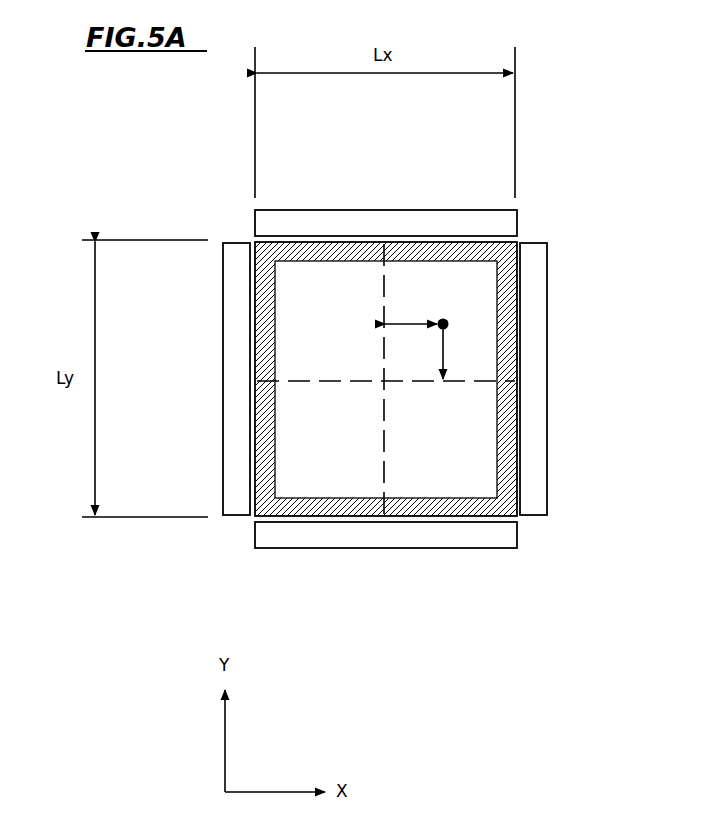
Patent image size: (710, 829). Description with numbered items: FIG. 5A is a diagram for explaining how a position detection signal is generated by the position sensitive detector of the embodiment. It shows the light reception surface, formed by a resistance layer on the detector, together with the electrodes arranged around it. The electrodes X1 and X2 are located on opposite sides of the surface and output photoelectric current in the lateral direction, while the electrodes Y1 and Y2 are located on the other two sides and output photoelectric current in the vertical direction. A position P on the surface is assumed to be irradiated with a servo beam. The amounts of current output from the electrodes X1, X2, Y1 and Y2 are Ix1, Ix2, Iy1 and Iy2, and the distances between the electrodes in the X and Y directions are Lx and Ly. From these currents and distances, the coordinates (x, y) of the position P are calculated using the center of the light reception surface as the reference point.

The position P is at (355, 379).
The electrode X1 is at (223, 382).
The electrode X2 is at (547, 382).
The electrode Y1 is at (384, 548).
The electrode Y2 is at (384, 210).